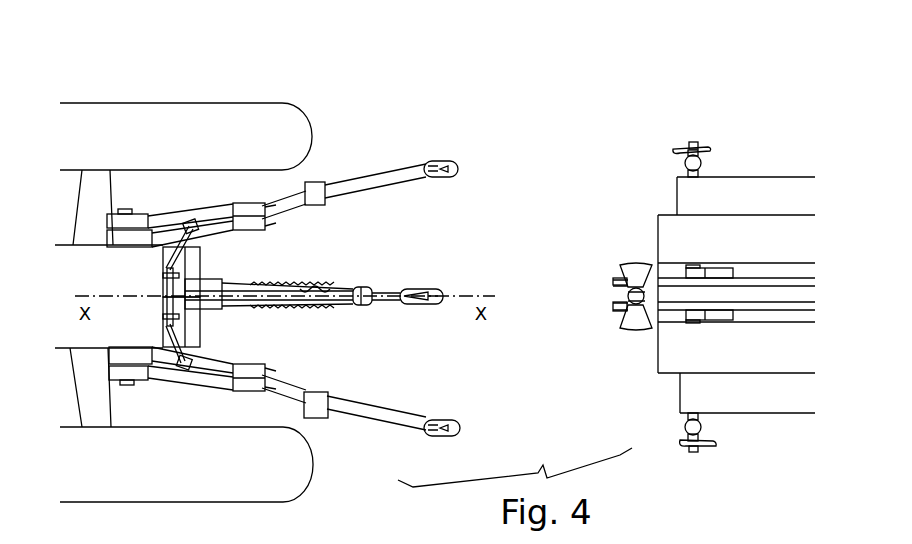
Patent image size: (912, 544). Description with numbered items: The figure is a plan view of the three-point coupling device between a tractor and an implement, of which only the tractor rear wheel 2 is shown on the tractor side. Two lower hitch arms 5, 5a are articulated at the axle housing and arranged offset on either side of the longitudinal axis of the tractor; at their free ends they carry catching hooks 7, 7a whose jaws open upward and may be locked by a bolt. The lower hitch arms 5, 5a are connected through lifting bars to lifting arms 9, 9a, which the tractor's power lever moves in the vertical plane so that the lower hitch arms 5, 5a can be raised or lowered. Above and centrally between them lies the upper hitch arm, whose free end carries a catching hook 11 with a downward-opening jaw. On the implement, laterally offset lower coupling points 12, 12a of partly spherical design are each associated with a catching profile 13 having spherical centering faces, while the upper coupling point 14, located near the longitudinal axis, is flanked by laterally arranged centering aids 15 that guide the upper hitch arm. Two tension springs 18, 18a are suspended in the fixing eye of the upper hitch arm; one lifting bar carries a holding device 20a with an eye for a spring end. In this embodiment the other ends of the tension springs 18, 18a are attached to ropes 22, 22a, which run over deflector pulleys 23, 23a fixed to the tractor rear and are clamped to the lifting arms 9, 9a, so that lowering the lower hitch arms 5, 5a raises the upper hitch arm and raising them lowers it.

The rear wheel 2 is at (285, 104).
The lower hitch arm 5 is at (381, 177).
The lower hitch arm 5a is at (376, 427).
The catching hook 7 is at (447, 160).
The catching hook 7a is at (447, 436).
The lifting arm 9 is at (192, 224).
The lifting arm 9a is at (197, 371).
The catching hook 11 is at (437, 288).
The lower coupling point 12 is at (680, 164).
The lower coupling point 12a is at (686, 427).
The catching profile 13 is at (712, 150).
The upper coupling point 14 is at (627, 297).
The centering aid 15 is at (636, 268).
The tension spring 18 is at (283, 287).
The tension spring 18a is at (300, 307).
The holding device 20a is at (288, 389).
The rope 22 is at (162, 253).
The rope 22a is at (168, 340).
The deflector pulley 23 is at (178, 273).
The deflector pulley 23a is at (178, 315).